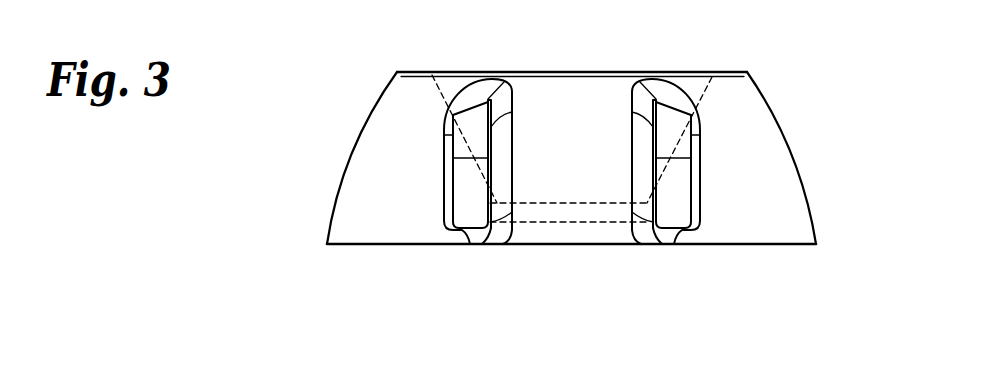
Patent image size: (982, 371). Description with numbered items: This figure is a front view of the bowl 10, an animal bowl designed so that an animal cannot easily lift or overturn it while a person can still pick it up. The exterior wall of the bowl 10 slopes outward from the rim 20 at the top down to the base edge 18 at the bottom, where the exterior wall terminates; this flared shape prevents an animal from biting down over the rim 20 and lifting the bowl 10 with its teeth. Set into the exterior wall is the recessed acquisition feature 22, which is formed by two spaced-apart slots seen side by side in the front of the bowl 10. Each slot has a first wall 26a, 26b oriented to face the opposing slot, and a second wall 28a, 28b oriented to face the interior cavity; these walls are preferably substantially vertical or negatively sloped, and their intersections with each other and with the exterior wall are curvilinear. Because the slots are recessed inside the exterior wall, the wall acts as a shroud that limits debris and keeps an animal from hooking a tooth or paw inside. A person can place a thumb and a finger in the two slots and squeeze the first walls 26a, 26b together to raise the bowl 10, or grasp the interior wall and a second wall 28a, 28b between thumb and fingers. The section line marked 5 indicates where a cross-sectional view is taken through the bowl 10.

The bowl 10 is at (784, 61).
The base edge 18 is at (358, 247).
The rim 20 is at (413, 73).
The recessed acquisition feature 22 is at (478, 117).
The first wall 26a is at (640, 177).
The first wall 26b is at (503, 177).
The second wall 28a is at (676, 205).
The second wall 28b is at (468, 203).
The section line 5- 5 is at (335, 168).